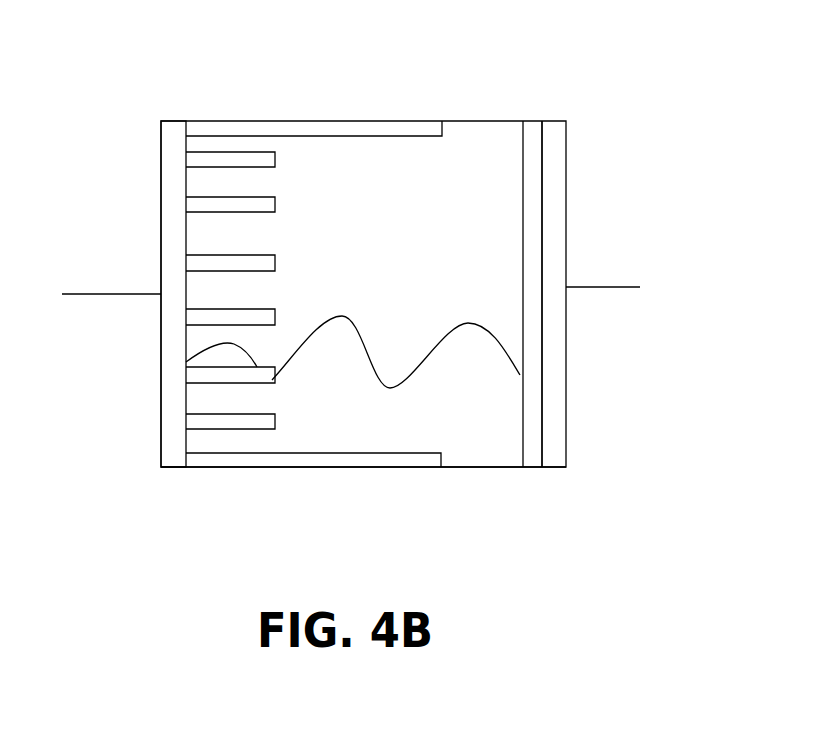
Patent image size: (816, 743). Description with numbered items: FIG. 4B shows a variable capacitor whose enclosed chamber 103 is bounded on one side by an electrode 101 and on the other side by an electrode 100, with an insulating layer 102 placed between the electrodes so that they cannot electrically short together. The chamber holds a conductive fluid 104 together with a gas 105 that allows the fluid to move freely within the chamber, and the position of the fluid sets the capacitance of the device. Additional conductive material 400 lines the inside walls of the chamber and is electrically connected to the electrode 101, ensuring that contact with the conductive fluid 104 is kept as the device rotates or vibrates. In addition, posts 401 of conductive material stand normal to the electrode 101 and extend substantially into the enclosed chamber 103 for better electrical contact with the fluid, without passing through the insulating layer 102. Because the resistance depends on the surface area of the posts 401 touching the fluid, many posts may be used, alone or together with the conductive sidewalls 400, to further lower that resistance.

The electrode 100 is at (565, 118).
The electrode 101 is at (173, 120).
The insulating layer 102 is at (540, 118).
The enclosed chamber 103 is at (465, 467).
The conductive fluid 104 is at (353, 370).
The gas 105 is at (399, 226).
The conductive material 400 is at (330, 474).
The posts 401 is at (253, 130).